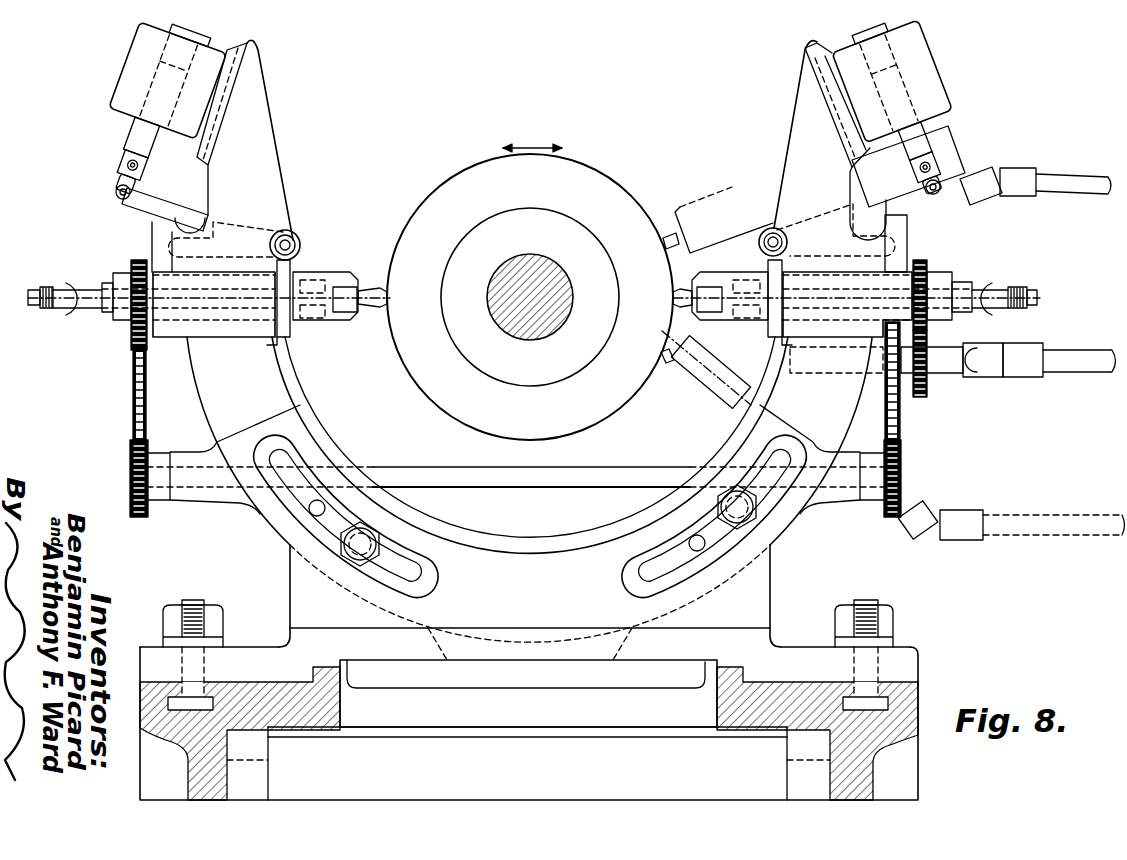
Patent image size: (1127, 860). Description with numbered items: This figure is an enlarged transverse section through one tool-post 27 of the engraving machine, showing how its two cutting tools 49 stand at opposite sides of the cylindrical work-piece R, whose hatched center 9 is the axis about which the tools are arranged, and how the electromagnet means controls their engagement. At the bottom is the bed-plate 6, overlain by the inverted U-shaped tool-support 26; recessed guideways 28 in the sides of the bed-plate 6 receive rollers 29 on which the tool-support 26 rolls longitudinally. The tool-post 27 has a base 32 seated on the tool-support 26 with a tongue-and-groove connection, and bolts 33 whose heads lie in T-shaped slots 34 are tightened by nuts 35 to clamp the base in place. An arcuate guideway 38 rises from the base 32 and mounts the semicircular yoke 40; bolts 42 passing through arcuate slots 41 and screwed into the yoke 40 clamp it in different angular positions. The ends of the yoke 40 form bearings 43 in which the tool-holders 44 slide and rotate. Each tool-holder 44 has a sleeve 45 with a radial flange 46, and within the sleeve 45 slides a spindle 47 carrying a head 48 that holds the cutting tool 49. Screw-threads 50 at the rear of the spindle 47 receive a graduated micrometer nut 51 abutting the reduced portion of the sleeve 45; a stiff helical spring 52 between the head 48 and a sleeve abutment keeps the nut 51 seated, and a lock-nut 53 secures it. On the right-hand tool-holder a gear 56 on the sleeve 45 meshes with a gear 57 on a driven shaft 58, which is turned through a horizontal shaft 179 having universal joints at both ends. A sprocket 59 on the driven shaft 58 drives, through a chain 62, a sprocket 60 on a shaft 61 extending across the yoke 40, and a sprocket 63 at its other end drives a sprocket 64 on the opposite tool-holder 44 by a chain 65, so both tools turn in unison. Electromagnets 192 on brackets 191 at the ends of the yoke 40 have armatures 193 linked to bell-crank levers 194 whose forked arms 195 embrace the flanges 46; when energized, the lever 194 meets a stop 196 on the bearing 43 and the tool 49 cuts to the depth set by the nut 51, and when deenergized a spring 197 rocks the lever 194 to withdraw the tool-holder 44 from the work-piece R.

The bed-plate 6 is at (627, 742).
The wheel spindle 9 is at (531, 268).
The tool-support 26 is at (333, 720).
The tool-post 27 is at (786, 551).
The recessed guideway 28 is at (272, 742).
The roller 29 is at (262, 758).
The base 32 is at (298, 643).
The bolt 33 is at (194, 600).
The T-shaped slot 34 is at (931, 695).
The nut 35 is at (172, 606).
The arcuate guideway 38 is at (283, 529).
The yoke 40 is at (202, 400).
The arcuate slot 41 is at (291, 452).
The bolt 42 is at (364, 540).
The bearing 43 is at (176, 333).
The tool-holder 44 is at (119, 264).
The sleeve 45 is at (202, 322).
The radial flange 46 is at (285, 329).
The spindle 47 is at (255, 312).
The head 48 is at (342, 322).
The cutting tool 49 is at (385, 300).
The screw-threads 50 is at (1016, 284).
The nut 51 is at (42, 310).
The helical spring 52 is at (312, 278).
The lock-nut 53 is at (42, 286).
The gear 56 is at (941, 320).
The gear 57 is at (928, 391).
The driven shaft 58 is at (971, 378).
The sprocket 59 is at (884, 383).
The sprocket 60 is at (902, 481).
The shaft 61 is at (535, 472).
The chain 62 is at (901, 423).
The sprocket 63 is at (131, 494).
The sprocket 64 is at (126, 321).
The chain 65 is at (133, 386).
The horizontal shaft 179 is at (1070, 368).
The bracket 191 is at (262, 118).
The electromagnet 192 is at (110, 100).
The armature 193 is at (140, 133).
The bell-crank lever 194 is at (188, 204).
The forked arm 195 is at (304, 252).
The stop 196 is at (163, 216).
The spring 197 is at (217, 227).
The work-piece R is at (455, 183).